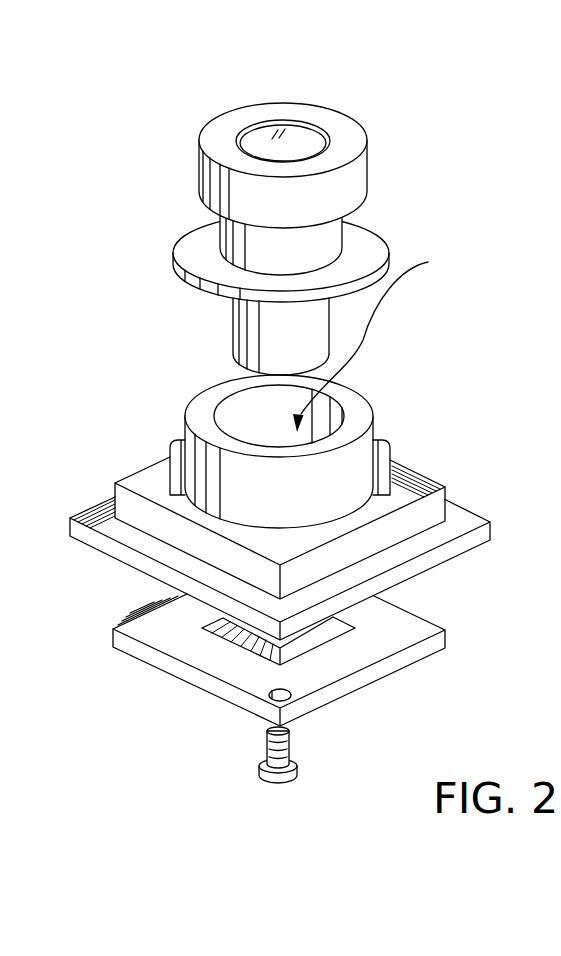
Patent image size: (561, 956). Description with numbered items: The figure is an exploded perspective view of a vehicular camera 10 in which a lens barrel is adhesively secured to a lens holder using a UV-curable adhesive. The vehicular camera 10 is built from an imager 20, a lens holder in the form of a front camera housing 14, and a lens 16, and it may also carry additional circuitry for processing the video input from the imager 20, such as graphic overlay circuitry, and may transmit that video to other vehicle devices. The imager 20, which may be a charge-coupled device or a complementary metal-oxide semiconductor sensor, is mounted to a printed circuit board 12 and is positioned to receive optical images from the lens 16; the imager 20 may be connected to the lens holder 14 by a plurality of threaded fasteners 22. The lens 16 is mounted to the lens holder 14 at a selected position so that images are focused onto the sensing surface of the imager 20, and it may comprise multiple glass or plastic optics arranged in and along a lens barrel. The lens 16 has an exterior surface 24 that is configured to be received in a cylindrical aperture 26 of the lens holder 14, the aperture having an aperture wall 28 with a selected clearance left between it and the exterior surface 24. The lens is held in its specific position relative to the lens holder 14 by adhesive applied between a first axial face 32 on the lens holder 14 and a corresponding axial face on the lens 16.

The vehicular camera 10 is at (426, 115).
The printed circuit board 12 is at (410, 655).
The lens holder 14 is at (457, 547).
The lens 16 is at (390, 249).
The imager 20 is at (297, 648).
The threaded fasteners 22 is at (297, 768).
The exterior surface 24 is at (378, 341).
The cylindrical aperture 26 is at (318, 338).
The aperture wall 28 is at (343, 417).
The first axial face 32 is at (366, 440).